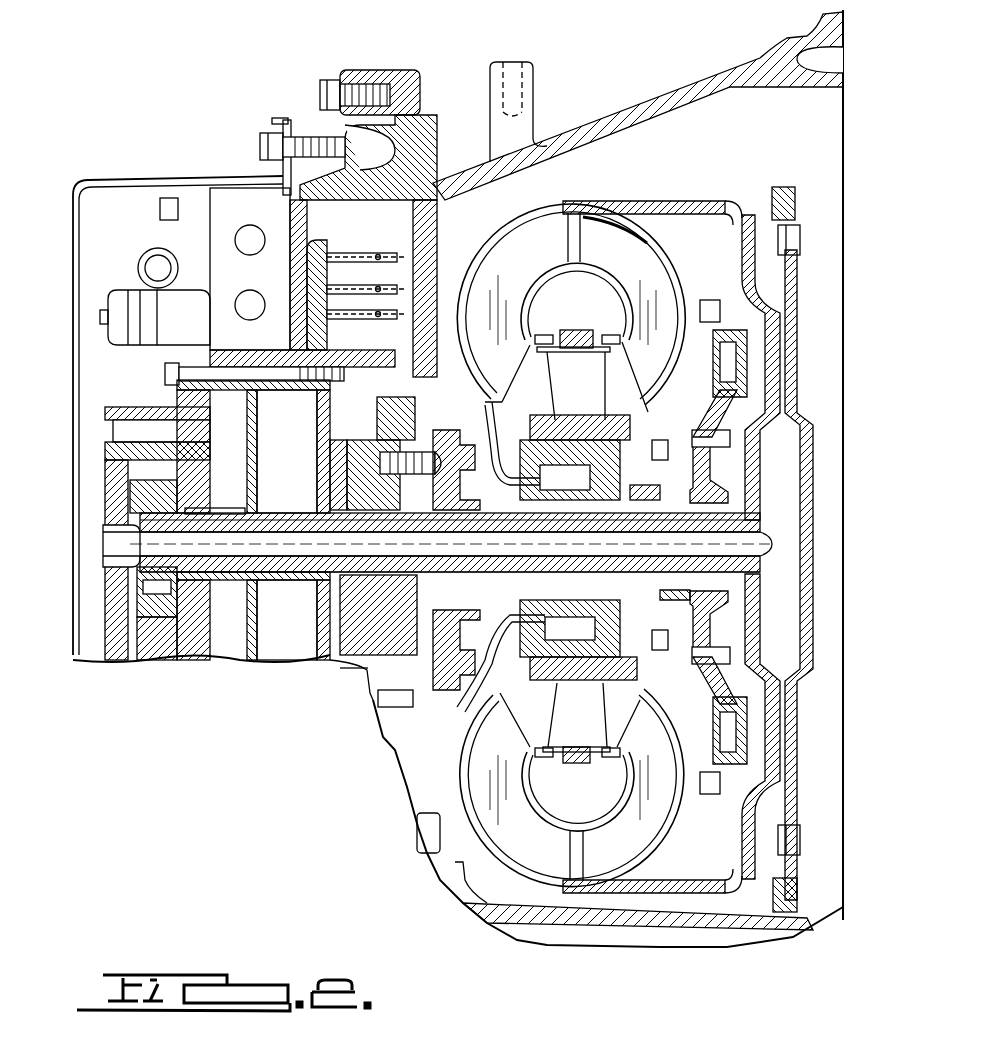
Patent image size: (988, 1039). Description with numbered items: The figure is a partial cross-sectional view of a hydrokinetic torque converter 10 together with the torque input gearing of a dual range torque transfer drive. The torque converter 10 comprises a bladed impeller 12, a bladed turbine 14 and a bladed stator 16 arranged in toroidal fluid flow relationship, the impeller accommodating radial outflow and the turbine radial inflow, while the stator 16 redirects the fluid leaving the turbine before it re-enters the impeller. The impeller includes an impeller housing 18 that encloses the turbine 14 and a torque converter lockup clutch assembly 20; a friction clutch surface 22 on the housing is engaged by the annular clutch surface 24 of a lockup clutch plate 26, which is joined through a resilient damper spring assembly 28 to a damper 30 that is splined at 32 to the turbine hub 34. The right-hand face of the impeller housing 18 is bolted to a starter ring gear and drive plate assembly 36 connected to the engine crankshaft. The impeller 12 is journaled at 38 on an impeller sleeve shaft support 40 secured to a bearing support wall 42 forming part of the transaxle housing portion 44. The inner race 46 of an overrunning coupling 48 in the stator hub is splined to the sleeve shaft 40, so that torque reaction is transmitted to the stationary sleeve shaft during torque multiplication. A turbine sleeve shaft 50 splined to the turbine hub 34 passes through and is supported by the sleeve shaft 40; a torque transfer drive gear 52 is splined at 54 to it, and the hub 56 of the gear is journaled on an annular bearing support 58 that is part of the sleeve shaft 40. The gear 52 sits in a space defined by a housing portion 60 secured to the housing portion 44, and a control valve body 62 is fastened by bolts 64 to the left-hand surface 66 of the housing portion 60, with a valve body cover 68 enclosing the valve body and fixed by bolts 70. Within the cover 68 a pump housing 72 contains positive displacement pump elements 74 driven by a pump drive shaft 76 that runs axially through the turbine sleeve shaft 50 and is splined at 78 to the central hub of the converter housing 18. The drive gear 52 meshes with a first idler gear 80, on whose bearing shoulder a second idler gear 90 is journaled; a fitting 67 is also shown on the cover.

The torque converter 10 is at (577, 524).
The bladed impeller 12 is at (487, 262).
The bladed turbine 14 is at (660, 272).
The bladed stator 16 is at (600, 382).
The impeller housing 18 is at (778, 355).
The torque converter lockup clutch assembly 20 is at (752, 333).
The friction clutch surface 22 is at (727, 210).
The annular clutch surface 24 is at (790, 250).
The lockup clutch plate 26 is at (718, 298).
The resilient damper spring assembly 28 is at (738, 405).
The damper 30 is at (722, 474).
The spline 32 is at (690, 600).
The turbine hub 34 is at (672, 495).
The starter ring gear and drive plate assembly 36 is at (795, 380).
The journal 38 is at (462, 478).
The impeller sleeve shaft support 40 is at (510, 455).
The bearing support wall 42 is at (440, 440).
The transaxle housing portion 44 is at (598, 120).
The inner race 46 is at (600, 490).
The overrunning coupling 48 is at (572, 468).
The turbine sleeve shaft 50 is at (557, 680).
The torque transfer drive gear 52 is at (380, 408).
The spline 54 is at (345, 500).
The hub 56 is at (360, 495).
The annular bearing support 58 is at (365, 465).
The housing portion 60 is at (285, 178).
The control valve body 62 is at (371, 190).
The bolts 64 is at (165, 374).
The left hand surface 66 is at (295, 278).
The fitting 67 is at (220, 255).
The valve body cover 68 is at (127, 180).
The bolts 70 is at (337, 82).
The pump housing 72 is at (130, 470).
The positive displacement pump elements 74 is at (155, 480).
The pump drive shaft 76 is at (198, 510).
The spline 78 is at (765, 548).
The first idler gear 80 is at (385, 738).
The second idler gear 90 is at (352, 672).